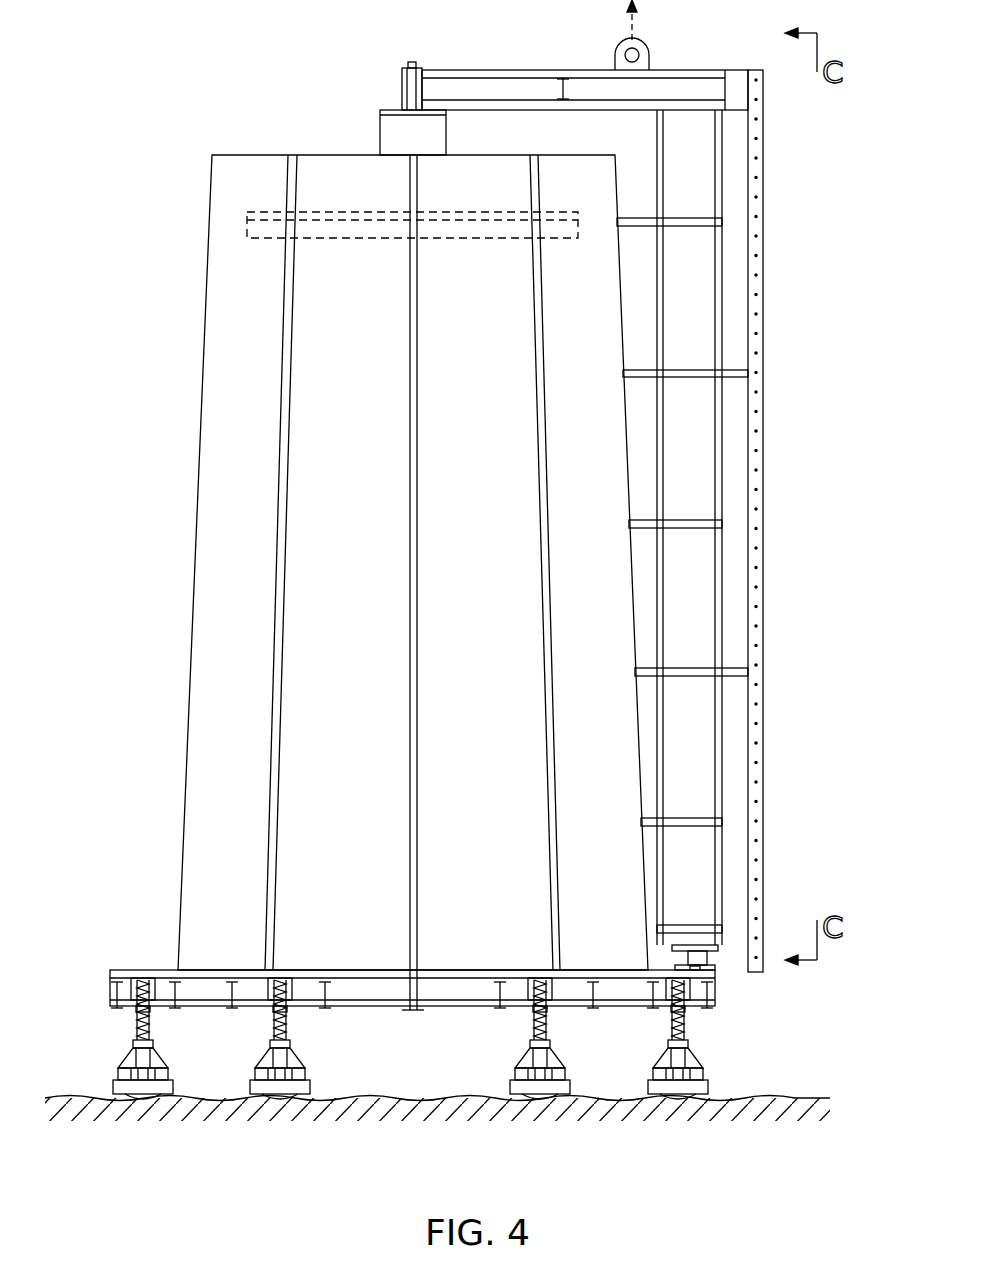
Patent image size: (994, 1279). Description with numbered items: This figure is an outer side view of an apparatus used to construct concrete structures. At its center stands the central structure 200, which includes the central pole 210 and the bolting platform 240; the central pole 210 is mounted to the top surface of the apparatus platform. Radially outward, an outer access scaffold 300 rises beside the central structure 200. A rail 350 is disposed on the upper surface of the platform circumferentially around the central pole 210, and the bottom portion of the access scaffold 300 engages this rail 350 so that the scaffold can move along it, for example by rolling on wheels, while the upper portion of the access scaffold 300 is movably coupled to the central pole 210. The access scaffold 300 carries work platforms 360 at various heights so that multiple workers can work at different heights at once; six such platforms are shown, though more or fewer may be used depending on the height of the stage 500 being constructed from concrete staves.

The central structure 200 is at (372, 185).
The central pole 210 is at (402, 125).
The bolting platform 240 is at (267, 212).
The outer access scaffold 300 is at (763, 262).
The rail 350 is at (718, 967).
The work platforms 360 is at (690, 517).
The stage 500 is at (590, 180).